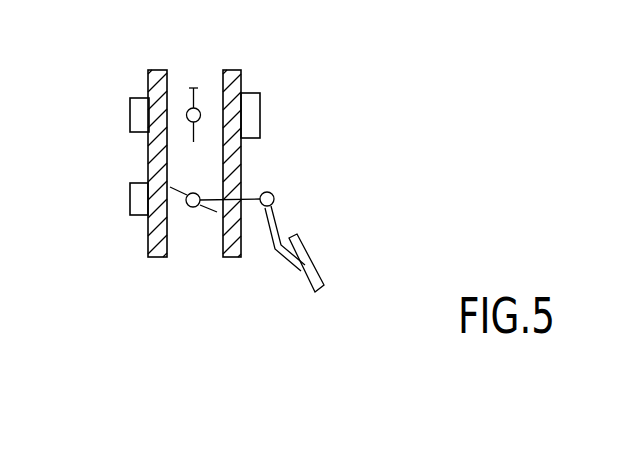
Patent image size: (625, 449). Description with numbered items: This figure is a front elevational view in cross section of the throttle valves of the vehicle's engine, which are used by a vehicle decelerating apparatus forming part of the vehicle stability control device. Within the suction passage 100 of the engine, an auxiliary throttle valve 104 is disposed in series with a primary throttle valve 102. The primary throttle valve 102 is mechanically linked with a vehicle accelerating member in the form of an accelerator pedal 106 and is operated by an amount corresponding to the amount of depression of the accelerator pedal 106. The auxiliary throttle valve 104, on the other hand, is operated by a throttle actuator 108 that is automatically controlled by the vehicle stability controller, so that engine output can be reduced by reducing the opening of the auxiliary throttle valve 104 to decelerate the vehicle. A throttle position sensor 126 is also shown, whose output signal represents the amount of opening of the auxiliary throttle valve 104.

The suction passage 100 is at (178, 230).
The primary throttle valve 102 is at (207, 207).
The auxiliary throttle valve 104 is at (198, 96).
The accelerator pedal 106 is at (320, 277).
The throttle actuator 108 is at (252, 102).
The throttle position sensor 126 is at (140, 115).